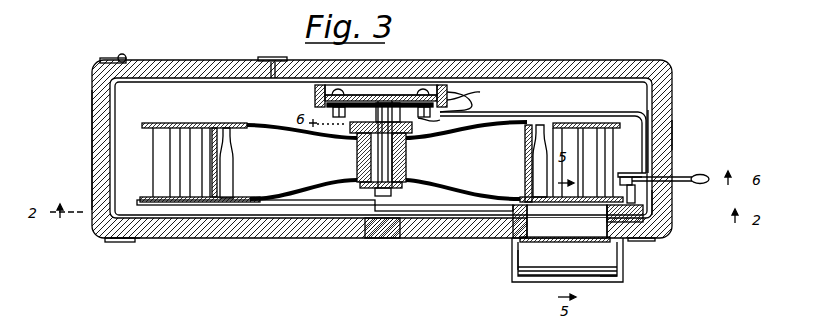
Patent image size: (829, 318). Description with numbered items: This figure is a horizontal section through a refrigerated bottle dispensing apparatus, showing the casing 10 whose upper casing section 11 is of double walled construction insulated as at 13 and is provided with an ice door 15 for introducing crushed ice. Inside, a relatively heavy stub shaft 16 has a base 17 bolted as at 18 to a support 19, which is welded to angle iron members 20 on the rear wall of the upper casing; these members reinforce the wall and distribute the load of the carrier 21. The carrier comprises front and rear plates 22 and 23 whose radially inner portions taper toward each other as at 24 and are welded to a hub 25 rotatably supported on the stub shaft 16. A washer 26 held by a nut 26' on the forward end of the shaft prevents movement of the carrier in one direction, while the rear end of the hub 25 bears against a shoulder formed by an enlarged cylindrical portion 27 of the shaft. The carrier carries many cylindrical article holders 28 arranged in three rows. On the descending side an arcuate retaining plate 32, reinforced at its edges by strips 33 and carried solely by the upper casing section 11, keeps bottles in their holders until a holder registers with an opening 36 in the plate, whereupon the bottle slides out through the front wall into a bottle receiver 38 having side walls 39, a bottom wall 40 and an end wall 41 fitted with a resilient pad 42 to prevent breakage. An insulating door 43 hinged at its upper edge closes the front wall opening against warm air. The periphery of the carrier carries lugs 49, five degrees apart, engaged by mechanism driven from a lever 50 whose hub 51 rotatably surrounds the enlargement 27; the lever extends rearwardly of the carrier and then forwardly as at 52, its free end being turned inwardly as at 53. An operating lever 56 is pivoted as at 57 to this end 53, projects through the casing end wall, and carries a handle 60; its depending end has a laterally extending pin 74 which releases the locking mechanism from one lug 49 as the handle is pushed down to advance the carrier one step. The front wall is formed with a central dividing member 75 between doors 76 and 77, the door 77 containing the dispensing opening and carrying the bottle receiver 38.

The casing 10 is at (675, 66).
The upper casing section 11 is at (675, 83).
The insulation 13 is at (97, 116).
The ice door 15 is at (160, 61).
The stub shaft 16 is at (357, 157).
The base 17 is at (447, 104).
The bolts 18 is at (420, 98).
The support 19 is at (404, 94).
The angle iron members 20 is at (457, 95).
The carrier 21 is at (172, 122).
The front plate 22 is at (152, 199).
The rear plate 23 is at (150, 122).
The tapered portions 24 is at (306, 190).
The hub 25 is at (406, 160).
The washer 26 is at (407, 192).
The nut 26' is at (366, 191).
The enlarged cylindrical portion 27 is at (378, 104).
The article holders 28 is at (195, 151).
The retaining plate 32 is at (517, 207).
The reinforcing strips 33 is at (604, 210).
The opening 36 is at (570, 210).
The bottle receiver 38 is at (626, 270).
The side walls 39 is at (622, 250).
The bottom wall 40 is at (530, 254).
The end wall 41 is at (608, 282).
The resilient pad 42 is at (543, 268).
The door 43 is at (600, 242).
The lugs 49 is at (142, 240).
The lever 50 is at (530, 112).
The hub 51 is at (433, 118).
The forwardly extending portion 52 is at (674, 134).
The inturned end 53 is at (623, 176).
The operating lever 56 is at (677, 176).
The pivot 57 is at (650, 170).
The handle 60 is at (710, 178).
The pin 74 is at (676, 202).
The central dividing member 75 is at (380, 238).
The door 76 is at (313, 240).
The door 77 is at (460, 240).